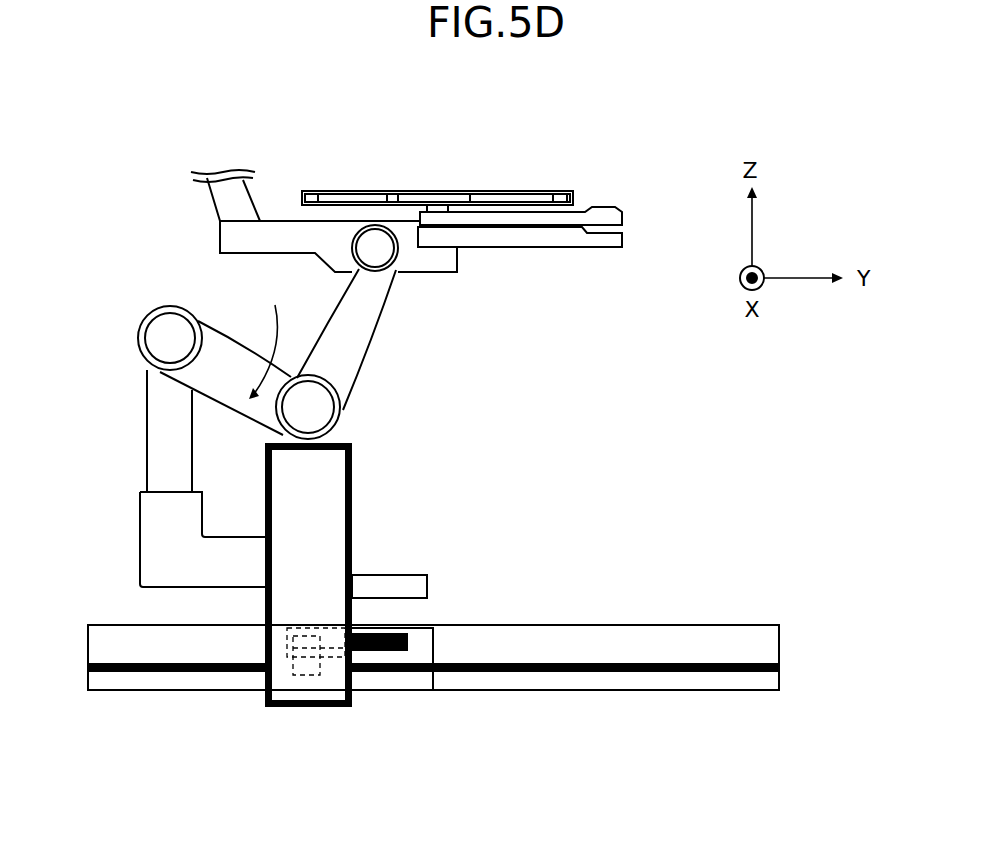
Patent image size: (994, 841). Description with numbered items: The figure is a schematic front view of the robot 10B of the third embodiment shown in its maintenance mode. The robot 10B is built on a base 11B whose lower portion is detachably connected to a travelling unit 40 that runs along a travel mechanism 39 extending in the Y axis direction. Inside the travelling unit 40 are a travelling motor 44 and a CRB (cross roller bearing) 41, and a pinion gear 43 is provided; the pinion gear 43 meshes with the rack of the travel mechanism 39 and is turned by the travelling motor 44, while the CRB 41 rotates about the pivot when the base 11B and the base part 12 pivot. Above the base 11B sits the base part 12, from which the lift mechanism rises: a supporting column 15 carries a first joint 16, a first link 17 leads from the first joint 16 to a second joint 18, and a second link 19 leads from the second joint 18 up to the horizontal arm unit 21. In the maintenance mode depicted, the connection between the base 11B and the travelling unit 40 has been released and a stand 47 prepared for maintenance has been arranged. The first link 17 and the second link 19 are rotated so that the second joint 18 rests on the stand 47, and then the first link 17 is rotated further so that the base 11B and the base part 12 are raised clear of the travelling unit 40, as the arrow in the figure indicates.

The robot 10B is at (633, 131).
The horizontal arm unit 21 is at (184, 237).
The second link 19 is at (350, 340).
The second joint 18 is at (320, 413).
The first joint 16 is at (155, 343).
The first link 17 is at (237, 397).
The supporting column 15 is at (157, 452).
The base part 12 is at (155, 542).
The stand 47 is at (333, 485).
The travelling motor 44 is at (315, 636).
The pinion gear 43 is at (308, 677).
The base 11B is at (410, 587).
The travel mechanism 39 is at (612, 714).
The travelling unit 40 is at (420, 650).
The CRB (cross roller bearing) 41 is at (378, 653).